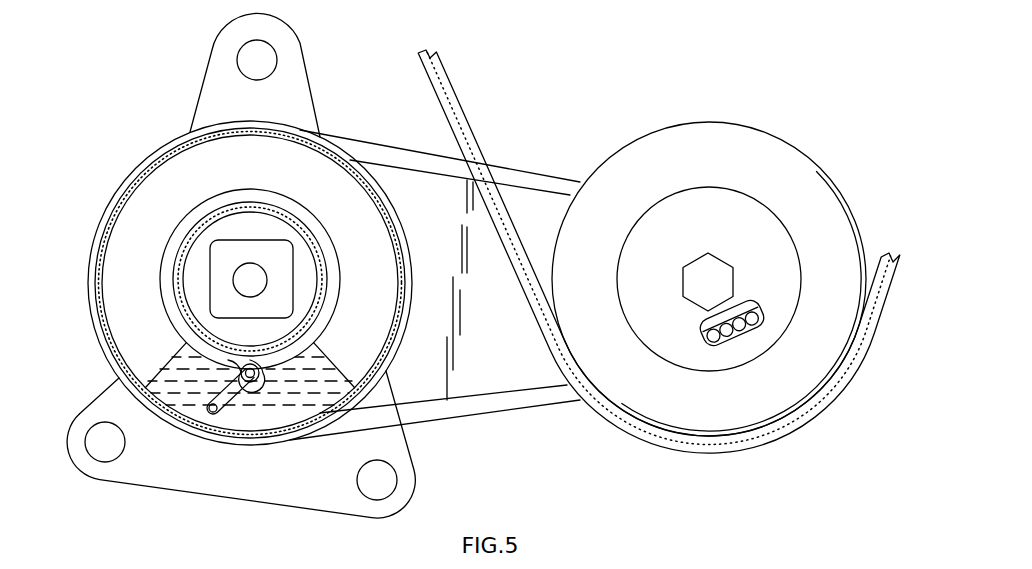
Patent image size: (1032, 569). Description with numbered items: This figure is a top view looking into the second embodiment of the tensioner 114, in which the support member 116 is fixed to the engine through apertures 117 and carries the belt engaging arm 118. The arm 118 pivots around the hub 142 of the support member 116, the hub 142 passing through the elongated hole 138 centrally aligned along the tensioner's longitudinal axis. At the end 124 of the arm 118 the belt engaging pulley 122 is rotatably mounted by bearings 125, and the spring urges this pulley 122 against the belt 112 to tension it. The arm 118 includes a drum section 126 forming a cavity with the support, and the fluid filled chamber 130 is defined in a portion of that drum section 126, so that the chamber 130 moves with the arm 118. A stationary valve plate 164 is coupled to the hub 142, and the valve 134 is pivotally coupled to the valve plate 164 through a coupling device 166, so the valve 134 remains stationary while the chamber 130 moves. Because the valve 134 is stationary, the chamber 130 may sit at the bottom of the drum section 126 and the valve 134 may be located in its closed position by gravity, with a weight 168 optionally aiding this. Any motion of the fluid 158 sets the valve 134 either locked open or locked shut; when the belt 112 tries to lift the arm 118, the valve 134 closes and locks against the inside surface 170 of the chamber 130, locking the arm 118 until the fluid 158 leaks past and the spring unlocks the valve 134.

The belt 112 is at (692, 453).
The tensioner 114 is at (645, 100).
The support member 116 is at (197, 85).
The apertures 117 is at (233, 53).
The belt engaging arm 118 is at (533, 170).
The belt engaging pulley 122 is at (800, 152).
The end of the arm 124 is at (806, 452).
The bearings 125 is at (740, 335).
The drum section 126 is at (168, 141).
The fluid filled chamber 130 is at (318, 397).
The valve 134 is at (230, 407).
The elongated hole 138 is at (220, 297).
The hub 142 is at (247, 247).
The fluid 158 is at (163, 377).
The stationary valve plate 164 is at (177, 233).
The coupling device 166 is at (241, 371).
The weight 168 is at (212, 412).
The inside surface 170 is at (270, 408).